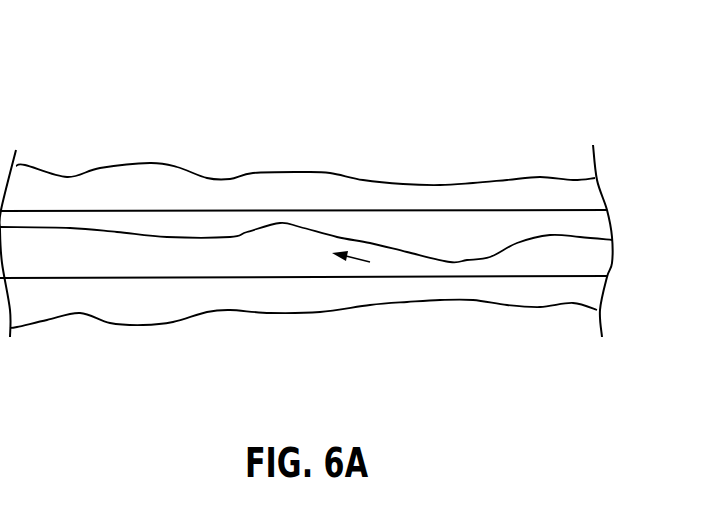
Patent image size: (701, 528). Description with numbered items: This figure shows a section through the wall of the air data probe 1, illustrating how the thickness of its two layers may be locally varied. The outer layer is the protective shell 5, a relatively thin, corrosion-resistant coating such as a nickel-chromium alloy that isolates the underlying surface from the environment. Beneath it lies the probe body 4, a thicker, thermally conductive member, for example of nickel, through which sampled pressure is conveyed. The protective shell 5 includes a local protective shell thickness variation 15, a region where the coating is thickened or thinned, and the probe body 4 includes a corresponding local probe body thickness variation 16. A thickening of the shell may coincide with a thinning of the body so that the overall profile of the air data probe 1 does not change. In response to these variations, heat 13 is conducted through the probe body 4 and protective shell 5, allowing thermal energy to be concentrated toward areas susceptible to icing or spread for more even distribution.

The air data probe 1 is at (108, 97).
The local protective shell thickness variation 15 is at (405, 193).
The protective shell 5 is at (627, 210).
The probe body 4 is at (627, 242).
The heat 13 is at (358, 262).
The local probe body thickness variation 16 is at (474, 270).